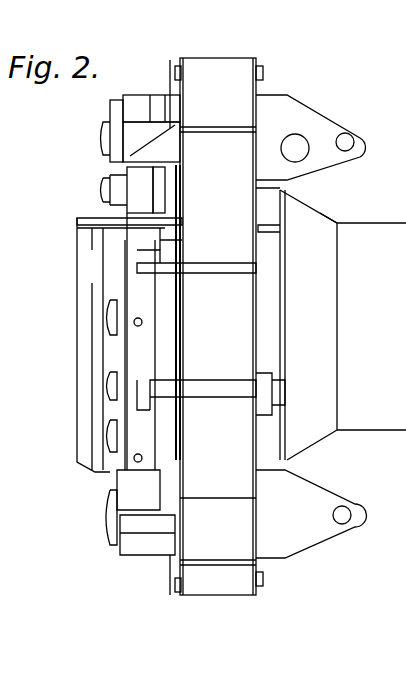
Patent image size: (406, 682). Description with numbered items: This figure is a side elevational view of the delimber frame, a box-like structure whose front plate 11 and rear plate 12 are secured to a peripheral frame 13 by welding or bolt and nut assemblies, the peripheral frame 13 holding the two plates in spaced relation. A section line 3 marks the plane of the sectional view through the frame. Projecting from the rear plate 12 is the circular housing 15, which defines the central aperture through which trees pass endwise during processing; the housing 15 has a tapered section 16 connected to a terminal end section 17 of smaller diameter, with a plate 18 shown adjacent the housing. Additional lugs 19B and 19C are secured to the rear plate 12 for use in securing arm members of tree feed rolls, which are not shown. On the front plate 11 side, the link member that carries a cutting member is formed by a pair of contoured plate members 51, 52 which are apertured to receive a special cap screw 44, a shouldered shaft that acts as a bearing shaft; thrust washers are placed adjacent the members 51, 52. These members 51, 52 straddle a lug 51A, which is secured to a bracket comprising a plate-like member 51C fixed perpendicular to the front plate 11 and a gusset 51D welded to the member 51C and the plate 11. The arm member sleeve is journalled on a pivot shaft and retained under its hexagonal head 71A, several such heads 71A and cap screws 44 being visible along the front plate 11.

The section line 3- 3 is at (182, 28).
The front plate 11 is at (175, 72).
The rear plate 12 is at (260, 82).
The peripheral frame 13 is at (238, 62).
The circular housing 15 is at (333, 203).
The tapered section 16 is at (312, 440).
The terminal end section 17 is at (374, 428).
The plate 18 is at (279, 236).
The lug 19B is at (318, 538).
The lug 19C is at (318, 116).
The special cap screw 44 is at (110, 110).
The member 51 is at (125, 205).
The lug 51A is at (150, 210).
The plate-like member 51C is at (112, 160).
The gusset 51D is at (152, 135).
The member 52 is at (148, 212).
The hexagonal head 71A is at (105, 140).